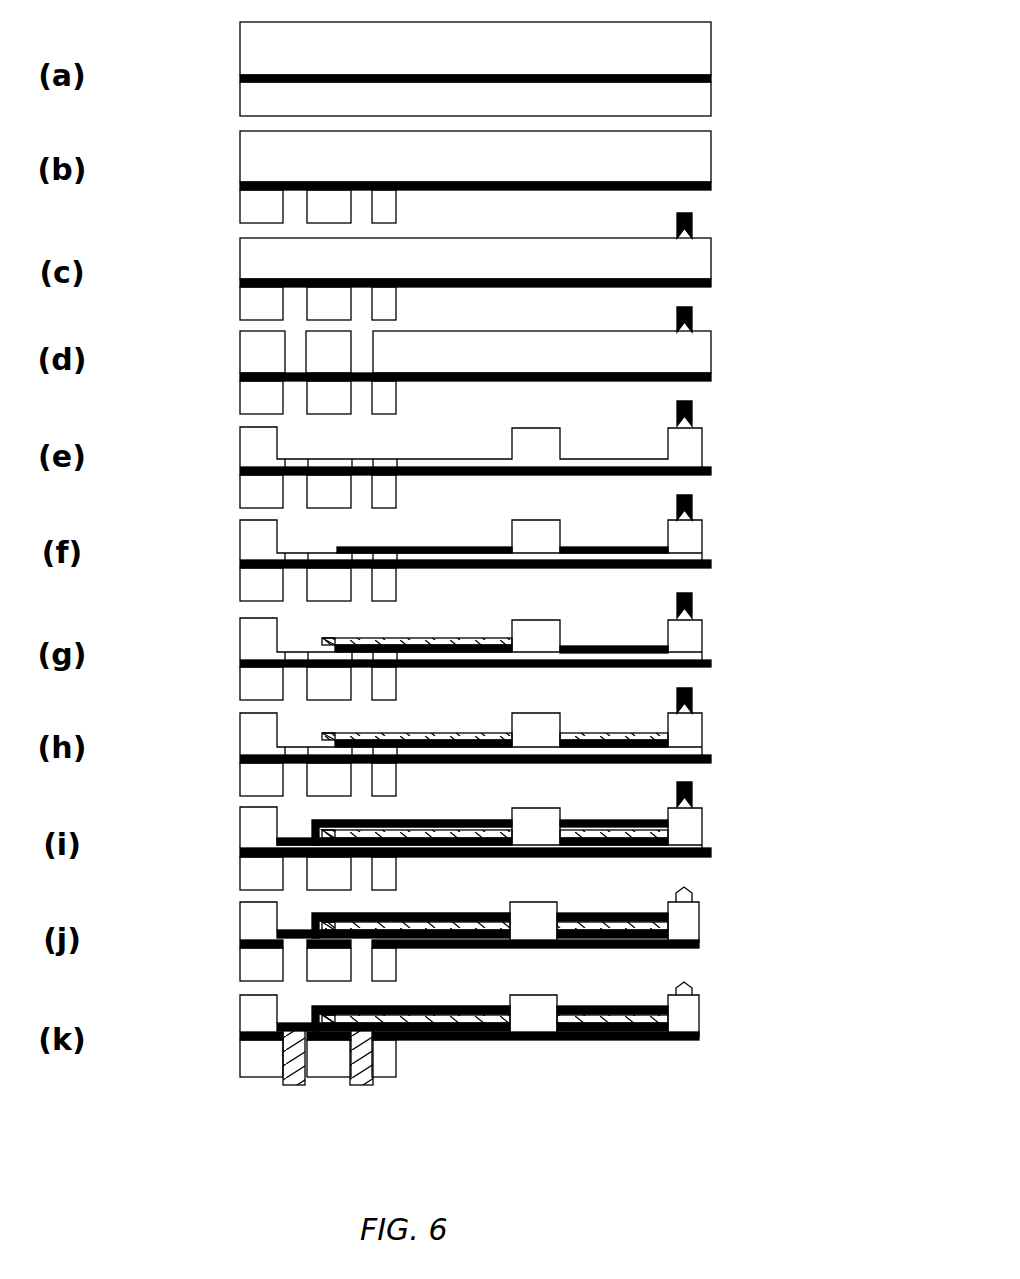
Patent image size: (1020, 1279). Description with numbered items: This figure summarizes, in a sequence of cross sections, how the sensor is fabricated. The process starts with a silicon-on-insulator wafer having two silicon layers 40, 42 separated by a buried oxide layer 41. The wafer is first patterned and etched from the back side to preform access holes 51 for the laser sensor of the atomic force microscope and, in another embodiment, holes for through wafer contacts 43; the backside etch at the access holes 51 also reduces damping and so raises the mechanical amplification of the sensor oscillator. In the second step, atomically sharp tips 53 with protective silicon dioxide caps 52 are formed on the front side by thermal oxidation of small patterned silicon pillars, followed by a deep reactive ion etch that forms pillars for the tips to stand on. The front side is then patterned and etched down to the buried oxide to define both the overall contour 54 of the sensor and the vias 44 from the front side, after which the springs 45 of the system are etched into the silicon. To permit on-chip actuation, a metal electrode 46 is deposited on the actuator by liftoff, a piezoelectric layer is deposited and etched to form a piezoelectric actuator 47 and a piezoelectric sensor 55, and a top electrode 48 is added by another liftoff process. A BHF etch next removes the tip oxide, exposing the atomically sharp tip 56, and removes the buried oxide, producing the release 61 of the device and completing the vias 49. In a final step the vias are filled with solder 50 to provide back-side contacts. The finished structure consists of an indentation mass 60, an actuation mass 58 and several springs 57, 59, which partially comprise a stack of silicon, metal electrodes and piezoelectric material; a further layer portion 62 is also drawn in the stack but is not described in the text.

The silicon layer 40 is at (240, 46).
The buried oxide layer 41 is at (240, 78).
The silicon layer 42 is at (240, 100).
The holes for through wafer contacts (via) 43 is at (282, 230).
The vias 44 is at (292, 352).
The springs 45 is at (430, 454).
The metal electrode 46 is at (418, 547).
The piezoelectric actuator 47 is at (320, 651).
The top electrode 48 is at (302, 822).
The vias 49 is at (298, 944).
The solder 50 is at (292, 1086).
The access holes 51 is at (655, 203).
The protective silicon dioxide caps 52 is at (693, 221).
The atomically sharp tips 53 is at (695, 234).
The overall contour of the sensor 54 is at (700, 354).
The piezoelectric sensor 55 is at (613, 728).
The atomically sharp tip 56 is at (694, 897).
The springs 57 is at (443, 1042).
The actuation mass 58 is at (532, 1042).
The springs 59 is at (607, 1042).
The indentation mass 60 is at (682, 1042).
The release 61 is at (678, 950).
The electrode portion 62 is at (607, 813).